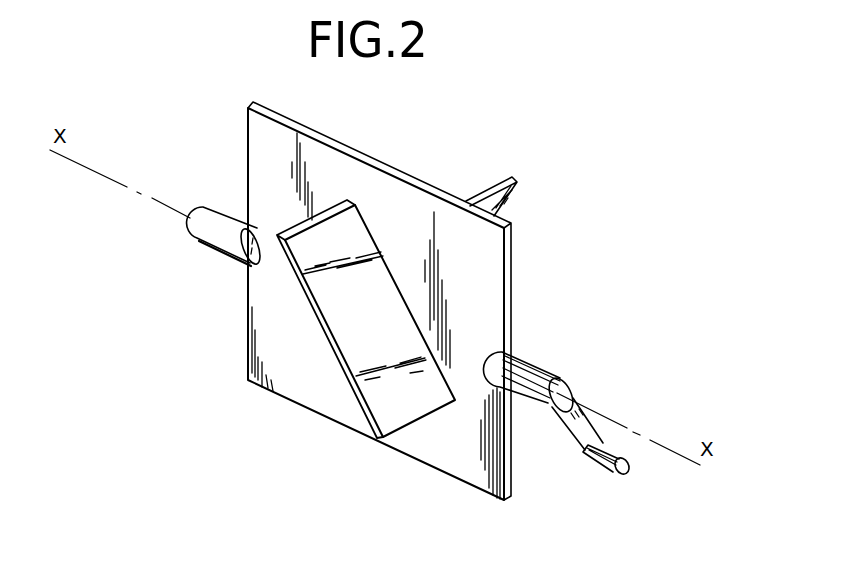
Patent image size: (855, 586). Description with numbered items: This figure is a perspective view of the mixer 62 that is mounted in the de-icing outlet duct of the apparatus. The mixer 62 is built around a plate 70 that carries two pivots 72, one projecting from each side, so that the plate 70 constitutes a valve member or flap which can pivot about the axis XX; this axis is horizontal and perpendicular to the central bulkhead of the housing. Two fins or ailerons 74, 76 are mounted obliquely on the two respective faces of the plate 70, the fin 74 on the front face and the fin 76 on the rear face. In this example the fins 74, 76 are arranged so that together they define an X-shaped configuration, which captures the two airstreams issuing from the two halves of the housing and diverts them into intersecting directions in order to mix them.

The mixer 62 is at (307, 411).
The plate 70 is at (470, 468).
The pivots 72 is at (218, 217).
The fin 74 is at (322, 298).
The fin 76 is at (480, 191).